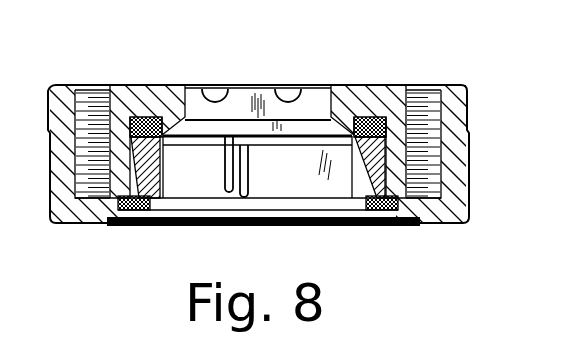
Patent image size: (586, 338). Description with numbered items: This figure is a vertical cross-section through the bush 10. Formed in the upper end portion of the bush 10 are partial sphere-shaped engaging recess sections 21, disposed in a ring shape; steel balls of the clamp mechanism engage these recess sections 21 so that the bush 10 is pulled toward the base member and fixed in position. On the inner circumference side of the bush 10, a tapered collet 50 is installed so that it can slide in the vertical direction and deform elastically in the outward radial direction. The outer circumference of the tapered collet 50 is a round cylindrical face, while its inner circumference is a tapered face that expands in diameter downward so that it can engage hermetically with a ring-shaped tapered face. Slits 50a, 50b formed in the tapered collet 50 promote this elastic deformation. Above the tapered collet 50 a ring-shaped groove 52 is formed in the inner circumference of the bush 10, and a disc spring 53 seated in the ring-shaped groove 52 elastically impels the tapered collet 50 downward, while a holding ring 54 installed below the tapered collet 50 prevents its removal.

The bush 10 is at (458, 156).
The engaging recess sections 21 is at (286, 86).
The tapered collet 50 is at (183, 190).
The slit 50a is at (232, 200).
The slit 50b is at (245, 200).
The ring-shaped groove 52 is at (157, 116).
The disc spring 53 is at (384, 116).
The holding ring 54 is at (388, 208).